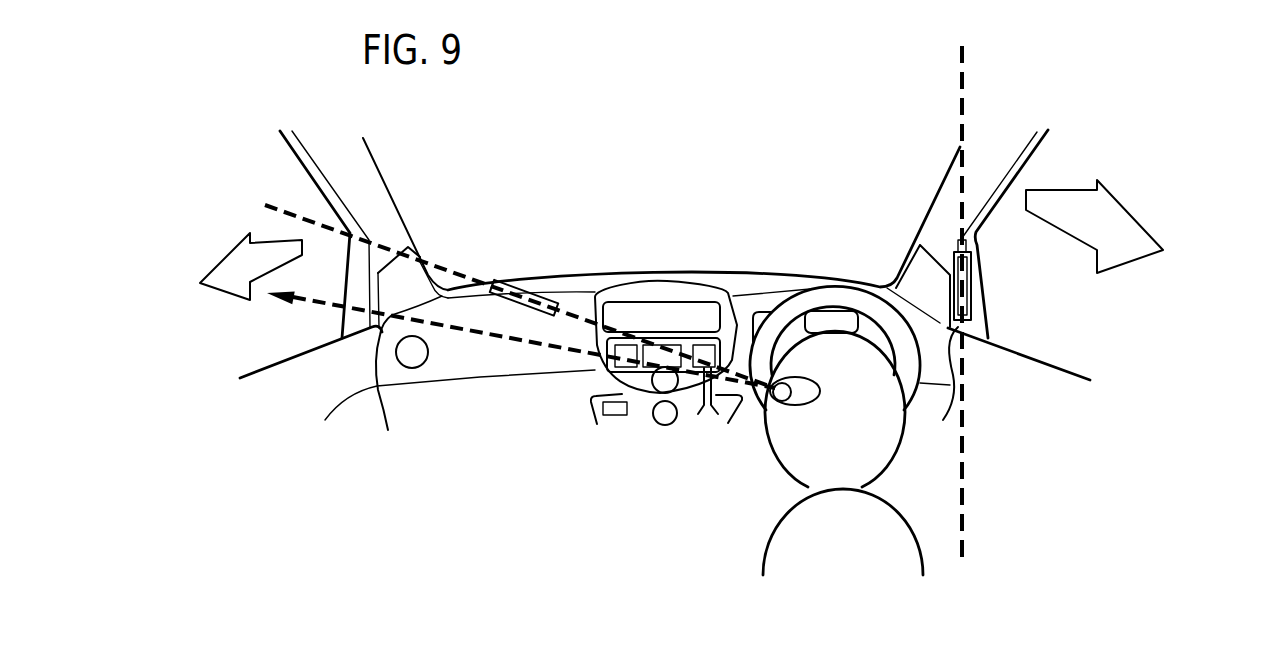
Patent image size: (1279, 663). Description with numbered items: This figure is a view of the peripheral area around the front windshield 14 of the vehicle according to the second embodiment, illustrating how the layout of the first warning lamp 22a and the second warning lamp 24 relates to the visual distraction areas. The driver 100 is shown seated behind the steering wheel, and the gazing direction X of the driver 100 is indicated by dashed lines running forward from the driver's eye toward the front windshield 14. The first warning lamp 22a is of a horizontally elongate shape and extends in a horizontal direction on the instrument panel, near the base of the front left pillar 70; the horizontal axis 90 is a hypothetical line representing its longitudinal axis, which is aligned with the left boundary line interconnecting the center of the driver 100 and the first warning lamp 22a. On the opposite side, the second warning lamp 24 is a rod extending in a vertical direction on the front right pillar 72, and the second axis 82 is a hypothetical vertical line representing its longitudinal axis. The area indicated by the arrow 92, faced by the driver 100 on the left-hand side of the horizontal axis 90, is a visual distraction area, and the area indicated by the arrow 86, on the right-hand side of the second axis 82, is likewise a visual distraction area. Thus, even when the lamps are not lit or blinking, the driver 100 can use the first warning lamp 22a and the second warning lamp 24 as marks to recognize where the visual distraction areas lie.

The front windshield 14 is at (513, 176).
The front left pillar 70 is at (365, 166).
The horizontal axis 90 is at (445, 262).
The first warning lamp 22a is at (537, 291).
The second axis 82 is at (960, 91).
The arrow 86 is at (1075, 213).
The front right pillar 72 is at (985, 183).
The second warning lamp 24 is at (972, 300).
The arrow 92 is at (240, 258).
The gazing direction X is at (487, 335).
The driver 100 is at (843, 457).